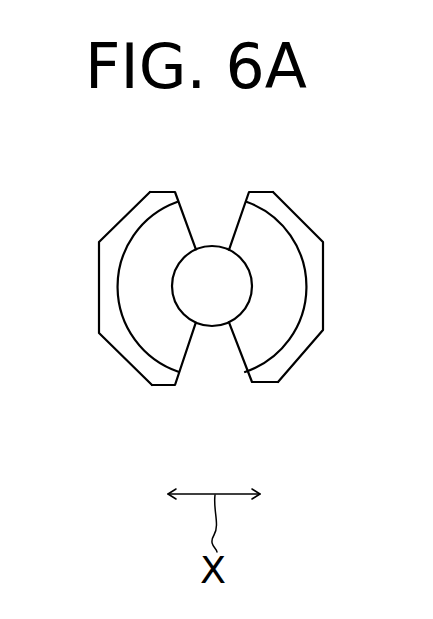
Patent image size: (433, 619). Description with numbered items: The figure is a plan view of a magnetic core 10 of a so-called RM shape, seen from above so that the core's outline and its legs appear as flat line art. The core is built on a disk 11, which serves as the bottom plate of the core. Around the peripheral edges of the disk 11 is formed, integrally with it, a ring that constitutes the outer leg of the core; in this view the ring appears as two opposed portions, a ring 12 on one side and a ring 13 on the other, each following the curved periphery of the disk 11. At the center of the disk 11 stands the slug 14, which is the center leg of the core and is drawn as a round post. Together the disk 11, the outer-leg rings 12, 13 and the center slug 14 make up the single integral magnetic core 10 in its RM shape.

The magnetic core 10 is at (103, 379).
The disk 11 is at (147, 233).
The ring 12 is at (317, 287).
The ring 13 is at (104, 293).
The slug 14 is at (237, 273).